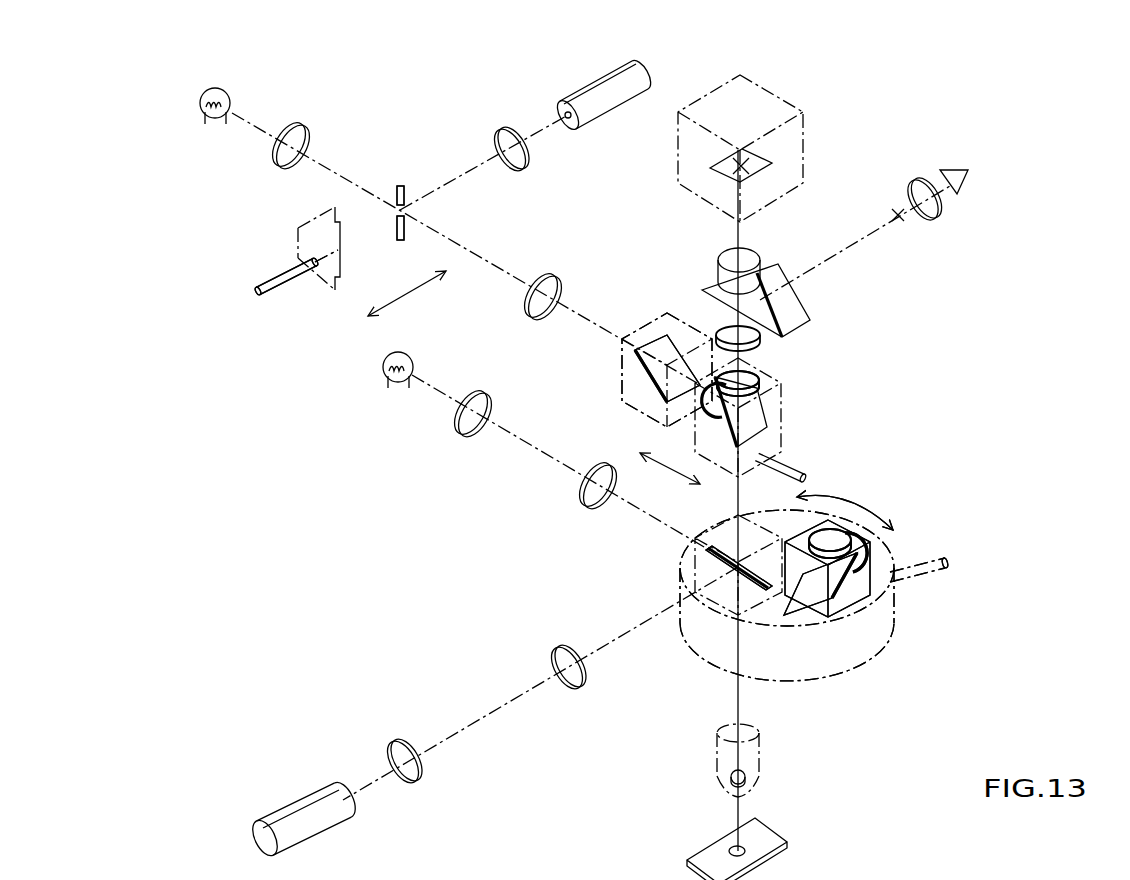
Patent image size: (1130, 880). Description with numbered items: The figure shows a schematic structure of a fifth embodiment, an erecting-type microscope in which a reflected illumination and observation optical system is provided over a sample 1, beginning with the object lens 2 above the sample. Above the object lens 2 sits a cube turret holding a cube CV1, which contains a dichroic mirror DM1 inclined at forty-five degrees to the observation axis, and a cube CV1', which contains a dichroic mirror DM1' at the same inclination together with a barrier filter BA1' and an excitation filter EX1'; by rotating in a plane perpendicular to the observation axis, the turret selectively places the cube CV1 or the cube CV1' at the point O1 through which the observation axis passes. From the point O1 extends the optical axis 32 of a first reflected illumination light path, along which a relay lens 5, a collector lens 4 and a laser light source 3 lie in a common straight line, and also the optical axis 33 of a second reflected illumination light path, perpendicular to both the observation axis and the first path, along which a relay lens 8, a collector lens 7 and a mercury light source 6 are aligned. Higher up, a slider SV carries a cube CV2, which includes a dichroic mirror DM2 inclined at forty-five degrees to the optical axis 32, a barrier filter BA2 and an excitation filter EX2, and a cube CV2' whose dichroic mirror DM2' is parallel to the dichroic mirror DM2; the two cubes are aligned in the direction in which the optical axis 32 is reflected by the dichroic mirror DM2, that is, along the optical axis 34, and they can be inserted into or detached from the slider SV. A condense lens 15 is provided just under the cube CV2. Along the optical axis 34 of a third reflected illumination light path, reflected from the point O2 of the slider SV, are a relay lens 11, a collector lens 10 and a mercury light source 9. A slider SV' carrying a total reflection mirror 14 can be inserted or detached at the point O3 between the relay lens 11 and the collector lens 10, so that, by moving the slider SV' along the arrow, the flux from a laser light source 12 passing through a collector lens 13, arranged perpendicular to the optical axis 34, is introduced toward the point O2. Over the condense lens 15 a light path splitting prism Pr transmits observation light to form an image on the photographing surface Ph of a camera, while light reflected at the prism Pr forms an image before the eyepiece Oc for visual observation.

The sample 1 is at (767, 840).
The object lens 2 is at (748, 773).
The laser light source 3 is at (306, 804).
The collector lens 4 is at (395, 746).
The relay lens 5 is at (556, 655).
The mercury light source 6 is at (384, 376).
The collector lens 7 is at (462, 430).
The relay lens 8 is at (589, 507).
The mercury light source 9 is at (216, 121).
The collector lens 10 is at (303, 135).
The relay lens 11 is at (558, 290).
The laser light source 12 is at (620, 100).
The collector lens 13 is at (506, 134).
The total reflection mirror 14 is at (342, 236).
The condense lens 15 is at (728, 331).
The optical axis 32 is at (512, 700).
The optical axis 33 is at (512, 434).
The optical axis 34 is at (500, 268).
The point O1 is at (704, 550).
The point O2 is at (762, 386).
The point O3 is at (405, 211).
The photographing surface Ph is at (758, 160).
The light path splitting prism Pr is at (806, 306).
The eyepiece Oc is at (936, 214).
The cube CV2' is at (664, 352).
The dichroic mirror DM2' is at (630, 368).
The barrier filter BA2 is at (724, 384).
The cube CV2 is at (770, 417).
The dichroic mirror DM2 is at (776, 412).
The slider SV is at (794, 456).
The slider SV' is at (287, 265).
The excitation filter EX2 is at (695, 420).
The dichroic mirror DM1 is at (715, 541).
The cube CV1 is at (707, 565).
The barrier filter BA1' is at (806, 526).
The cube CV1' is at (864, 568).
The excitation filter EX1' is at (814, 588).
The dichroic mirror DM1' is at (866, 602).